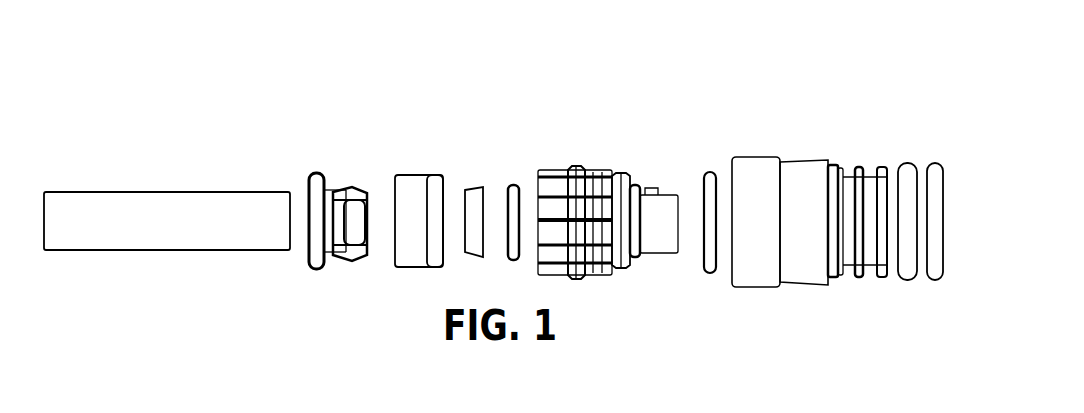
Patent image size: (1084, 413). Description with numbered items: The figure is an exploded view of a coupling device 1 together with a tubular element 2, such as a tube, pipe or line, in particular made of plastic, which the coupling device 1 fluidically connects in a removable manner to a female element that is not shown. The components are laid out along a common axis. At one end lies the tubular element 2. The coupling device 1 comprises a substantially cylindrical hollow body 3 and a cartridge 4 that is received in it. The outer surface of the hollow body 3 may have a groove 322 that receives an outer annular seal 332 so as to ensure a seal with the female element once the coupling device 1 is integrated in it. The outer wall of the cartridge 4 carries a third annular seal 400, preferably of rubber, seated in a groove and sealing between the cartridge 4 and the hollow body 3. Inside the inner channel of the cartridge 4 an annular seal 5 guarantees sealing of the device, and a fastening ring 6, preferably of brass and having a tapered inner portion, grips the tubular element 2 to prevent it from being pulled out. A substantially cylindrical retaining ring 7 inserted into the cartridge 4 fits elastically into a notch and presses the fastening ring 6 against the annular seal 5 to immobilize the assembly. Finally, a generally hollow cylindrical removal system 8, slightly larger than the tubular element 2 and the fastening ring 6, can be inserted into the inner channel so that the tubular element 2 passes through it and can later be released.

The coupling device 1 is at (797, 69).
The tubular element 2 is at (142, 168).
The hollow body 3 is at (823, 134).
The cartridge 4 is at (618, 143).
The annular seal 5 is at (511, 161).
The fastening ring 6 is at (477, 161).
The retaining ring 7 is at (426, 148).
The removal system 8 is at (336, 161).
The annular seal 400 is at (710, 143).
The groove 322 is at (905, 145).
The outer annular seal 332 is at (938, 145).